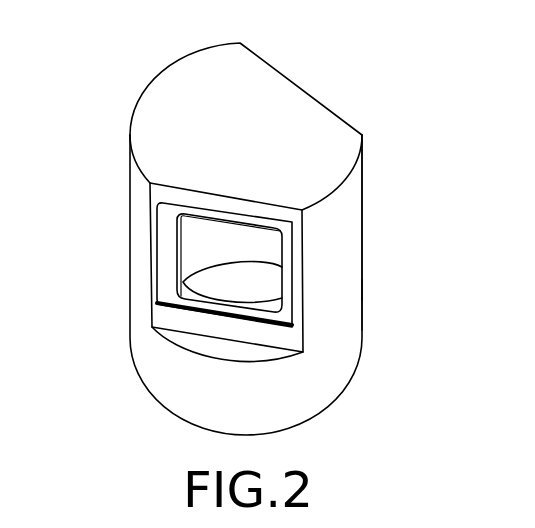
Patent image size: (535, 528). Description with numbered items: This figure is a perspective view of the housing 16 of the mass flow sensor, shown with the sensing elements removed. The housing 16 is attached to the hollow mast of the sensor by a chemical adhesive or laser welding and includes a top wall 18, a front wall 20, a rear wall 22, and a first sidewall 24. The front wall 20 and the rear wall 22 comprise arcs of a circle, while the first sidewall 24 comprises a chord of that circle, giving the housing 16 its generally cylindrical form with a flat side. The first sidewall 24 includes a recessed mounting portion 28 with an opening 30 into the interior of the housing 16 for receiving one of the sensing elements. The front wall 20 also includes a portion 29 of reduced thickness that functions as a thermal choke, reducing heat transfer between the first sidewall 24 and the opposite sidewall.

The housing 16 is at (385, 345).
The top wall 18 is at (281, 100).
The front wall 20 is at (340, 248).
The rear wall 22 is at (140, 192).
The first sidewall 24 is at (178, 383).
The recessed mounting portion 28 is at (170, 297).
The portion of reduced thickness 29 is at (337, 297).
The opening 30 is at (217, 285).